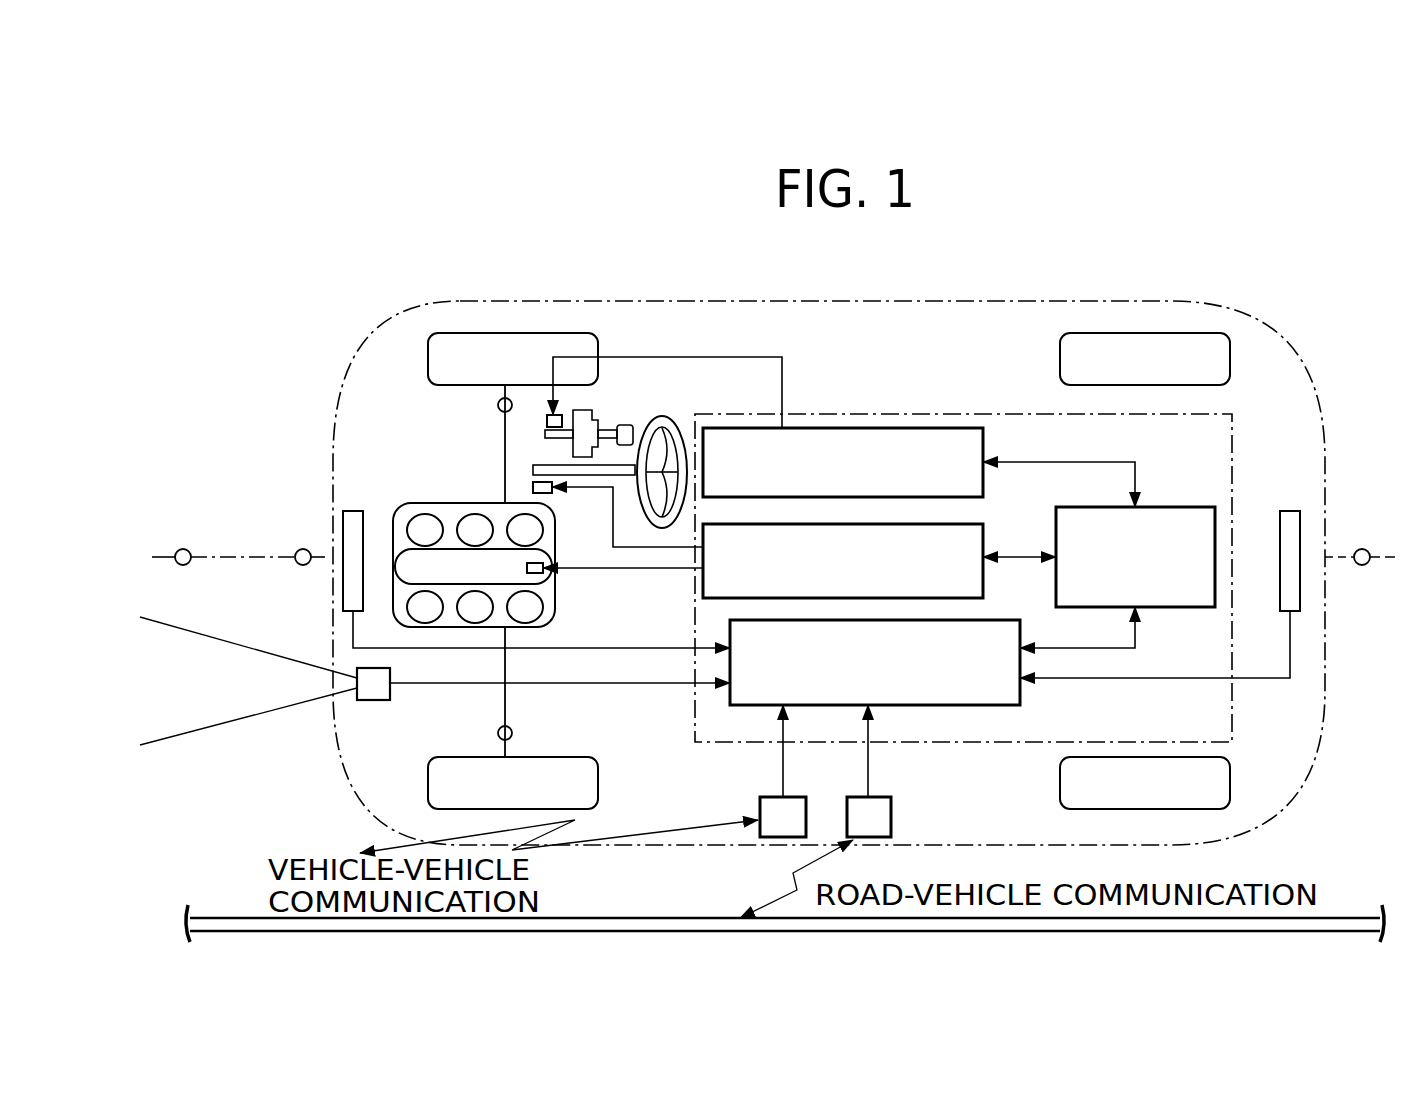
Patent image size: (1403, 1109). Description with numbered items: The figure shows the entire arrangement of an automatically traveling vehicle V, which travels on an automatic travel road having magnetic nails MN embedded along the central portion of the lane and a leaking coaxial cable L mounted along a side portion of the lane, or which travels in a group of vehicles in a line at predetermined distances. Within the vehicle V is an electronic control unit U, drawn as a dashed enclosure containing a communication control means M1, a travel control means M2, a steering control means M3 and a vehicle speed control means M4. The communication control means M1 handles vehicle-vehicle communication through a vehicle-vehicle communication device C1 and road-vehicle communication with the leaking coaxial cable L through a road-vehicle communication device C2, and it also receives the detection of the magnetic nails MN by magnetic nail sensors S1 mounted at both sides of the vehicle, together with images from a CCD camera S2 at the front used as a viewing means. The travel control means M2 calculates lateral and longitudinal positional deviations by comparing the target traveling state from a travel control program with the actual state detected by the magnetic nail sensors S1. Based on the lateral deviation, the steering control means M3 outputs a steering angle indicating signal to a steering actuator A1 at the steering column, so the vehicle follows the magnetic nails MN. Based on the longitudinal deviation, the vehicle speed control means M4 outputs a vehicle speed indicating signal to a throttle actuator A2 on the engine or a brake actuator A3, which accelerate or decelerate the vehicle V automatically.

The vehicle V is at (840, 300).
The electronic control unit U is at (915, 414).
The magnetic nails MN is at (188, 550).
The magnetic nail sensors S1 is at (353, 516).
The CCD camera S2 is at (373, 700).
The steering actuator A1 is at (545, 493).
The throttle actuator A2 is at (527, 568).
The brake actuator A3 is at (547, 421).
The communication control means M1 is at (882, 648).
The travel control means M2 is at (1138, 539).
The steering control means M3 is at (869, 458).
The vehicle speed control means M4 is at (869, 555).
The vehicle-vehicle communication device C1 is at (783, 817).
The road-vehicle communication device C2 is at (869, 817).
The leaking coaxial cable L is at (222, 918).